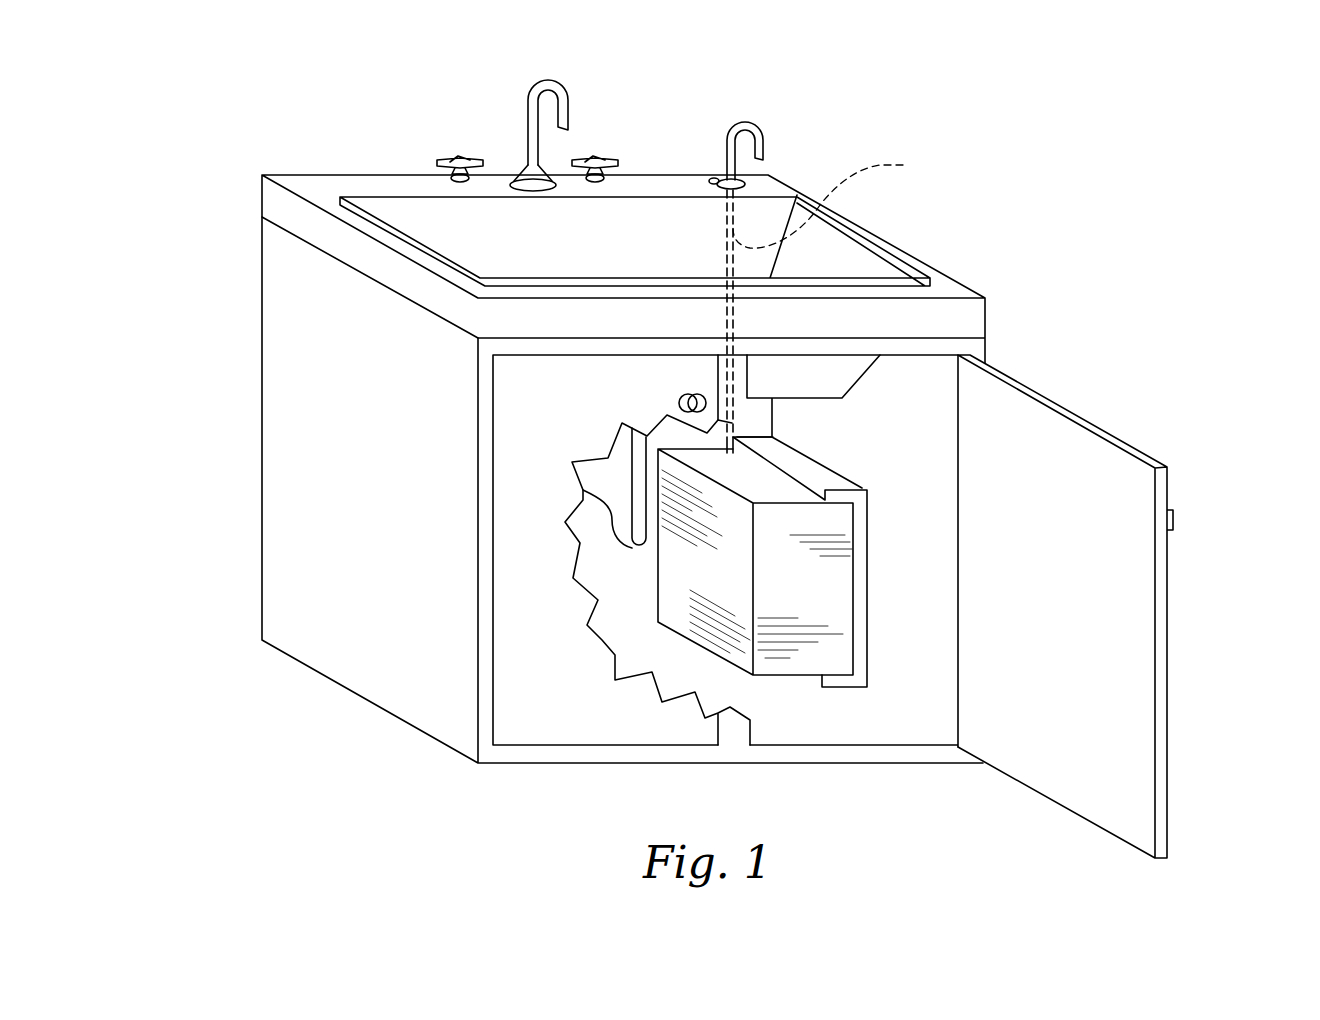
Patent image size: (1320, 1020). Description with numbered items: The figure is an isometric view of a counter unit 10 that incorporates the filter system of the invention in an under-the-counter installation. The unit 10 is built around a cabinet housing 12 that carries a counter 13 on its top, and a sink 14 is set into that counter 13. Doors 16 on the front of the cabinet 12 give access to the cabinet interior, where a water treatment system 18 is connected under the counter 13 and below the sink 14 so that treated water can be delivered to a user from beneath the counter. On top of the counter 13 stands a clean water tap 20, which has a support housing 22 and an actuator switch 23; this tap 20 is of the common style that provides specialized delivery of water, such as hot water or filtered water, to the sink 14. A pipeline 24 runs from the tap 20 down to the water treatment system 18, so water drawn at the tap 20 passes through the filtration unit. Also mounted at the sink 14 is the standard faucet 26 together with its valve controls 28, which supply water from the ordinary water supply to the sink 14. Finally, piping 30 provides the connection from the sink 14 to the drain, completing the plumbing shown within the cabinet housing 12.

The counter unit 10 is at (1006, 180).
The cabinet housing 12 is at (297, 515).
The counter 13 is at (325, 175).
The sink 14 is at (928, 290).
The doors 16 is at (1156, 468).
The water treatment system 18 is at (798, 668).
The clean water tap 20 is at (743, 127).
The support housing 22 is at (753, 178).
The actuator switch 23 is at (713, 178).
The pipeline 24 is at (835, 199).
The standard faucet 26 is at (547, 88).
The valve controls 28 is at (458, 160).
The piping 30 is at (622, 547).